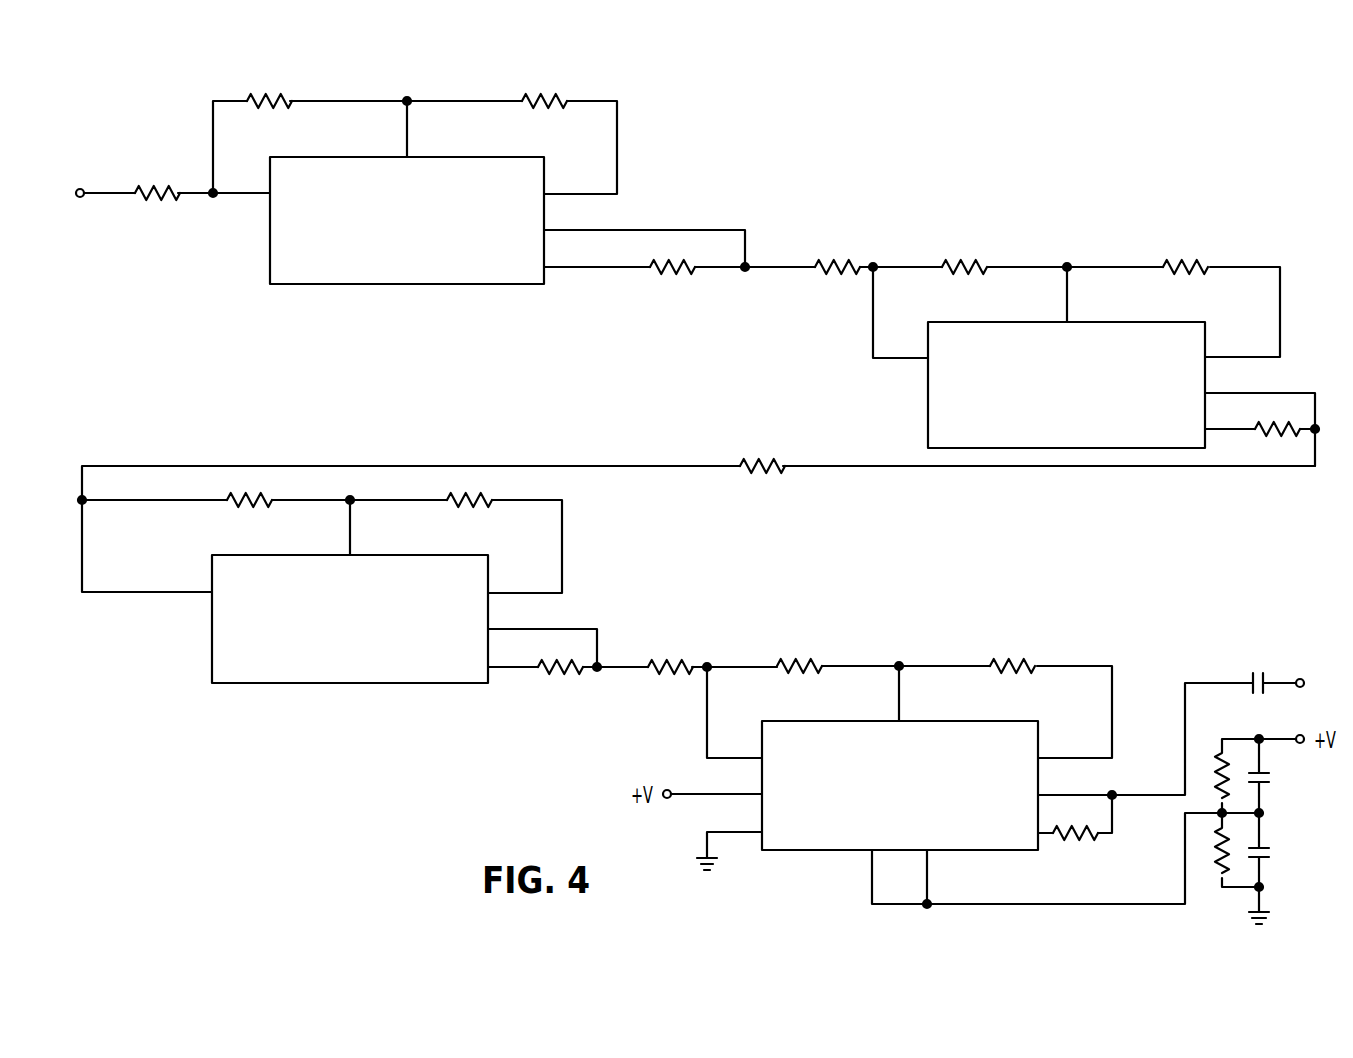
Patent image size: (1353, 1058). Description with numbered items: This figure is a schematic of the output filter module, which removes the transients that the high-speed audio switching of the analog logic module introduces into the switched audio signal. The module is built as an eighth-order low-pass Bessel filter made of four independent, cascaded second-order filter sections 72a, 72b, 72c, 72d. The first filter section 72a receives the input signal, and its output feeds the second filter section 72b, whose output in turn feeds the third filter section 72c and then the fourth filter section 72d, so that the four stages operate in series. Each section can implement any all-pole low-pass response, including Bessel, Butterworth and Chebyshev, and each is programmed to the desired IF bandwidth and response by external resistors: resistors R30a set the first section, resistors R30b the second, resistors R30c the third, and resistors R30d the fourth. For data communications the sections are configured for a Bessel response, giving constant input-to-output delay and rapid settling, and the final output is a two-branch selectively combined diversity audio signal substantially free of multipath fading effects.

The first second-order filter section 72a is at (270, 220).
The second second-order filter section 72b is at (928, 392).
The third second-order filter section 72c is at (212, 620).
The fourth second-order filter section 72d is at (852, 852).
The external resistors of the first filter section R30a is at (414, 185).
The external resistors of the second filter section R30b is at (1057, 332).
The external resistors of the third filter section R30c is at (506, 583).
The external resistors of the fourth filter section R30d is at (871, 751).